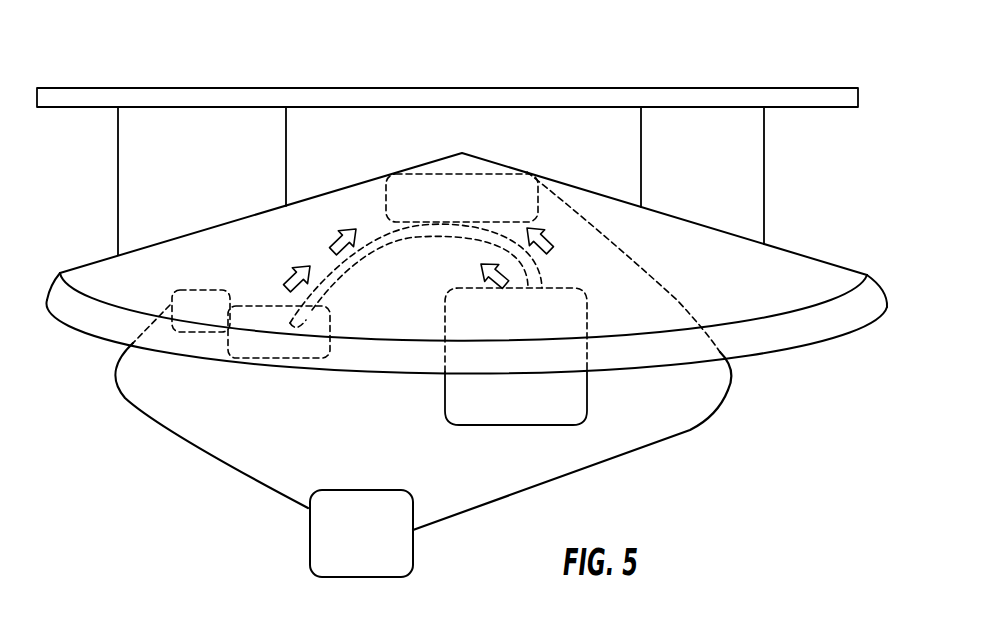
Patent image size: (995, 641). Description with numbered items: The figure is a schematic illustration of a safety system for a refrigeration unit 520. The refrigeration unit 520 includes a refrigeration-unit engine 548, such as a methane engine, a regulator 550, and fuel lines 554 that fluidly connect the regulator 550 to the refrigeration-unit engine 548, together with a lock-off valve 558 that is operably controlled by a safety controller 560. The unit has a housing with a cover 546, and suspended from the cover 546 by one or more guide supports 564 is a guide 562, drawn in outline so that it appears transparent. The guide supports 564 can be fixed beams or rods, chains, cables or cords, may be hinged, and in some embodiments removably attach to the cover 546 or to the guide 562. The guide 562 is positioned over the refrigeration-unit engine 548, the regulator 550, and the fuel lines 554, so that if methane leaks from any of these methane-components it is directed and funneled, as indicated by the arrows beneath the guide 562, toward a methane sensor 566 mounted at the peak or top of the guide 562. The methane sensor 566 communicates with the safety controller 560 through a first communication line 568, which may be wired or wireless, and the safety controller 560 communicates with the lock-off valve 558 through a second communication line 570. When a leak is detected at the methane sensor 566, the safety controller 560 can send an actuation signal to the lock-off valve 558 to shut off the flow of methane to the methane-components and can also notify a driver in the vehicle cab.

The refrigeration unit 520 is at (183, 46).
The cover 546 is at (465, 87).
The guide supports 564 is at (132, 178).
The guide 562 is at (828, 272).
The methane sensor 566 is at (497, 193).
The fuel lines 554 is at (380, 240).
The lock-off valve 558 is at (197, 294).
The regulator 550 is at (283, 347).
The refrigeration-unit engine 548 is at (577, 390).
The safety controller 560 is at (407, 545).
The first communication line 568 is at (685, 433).
The second communication line 570 is at (210, 455).